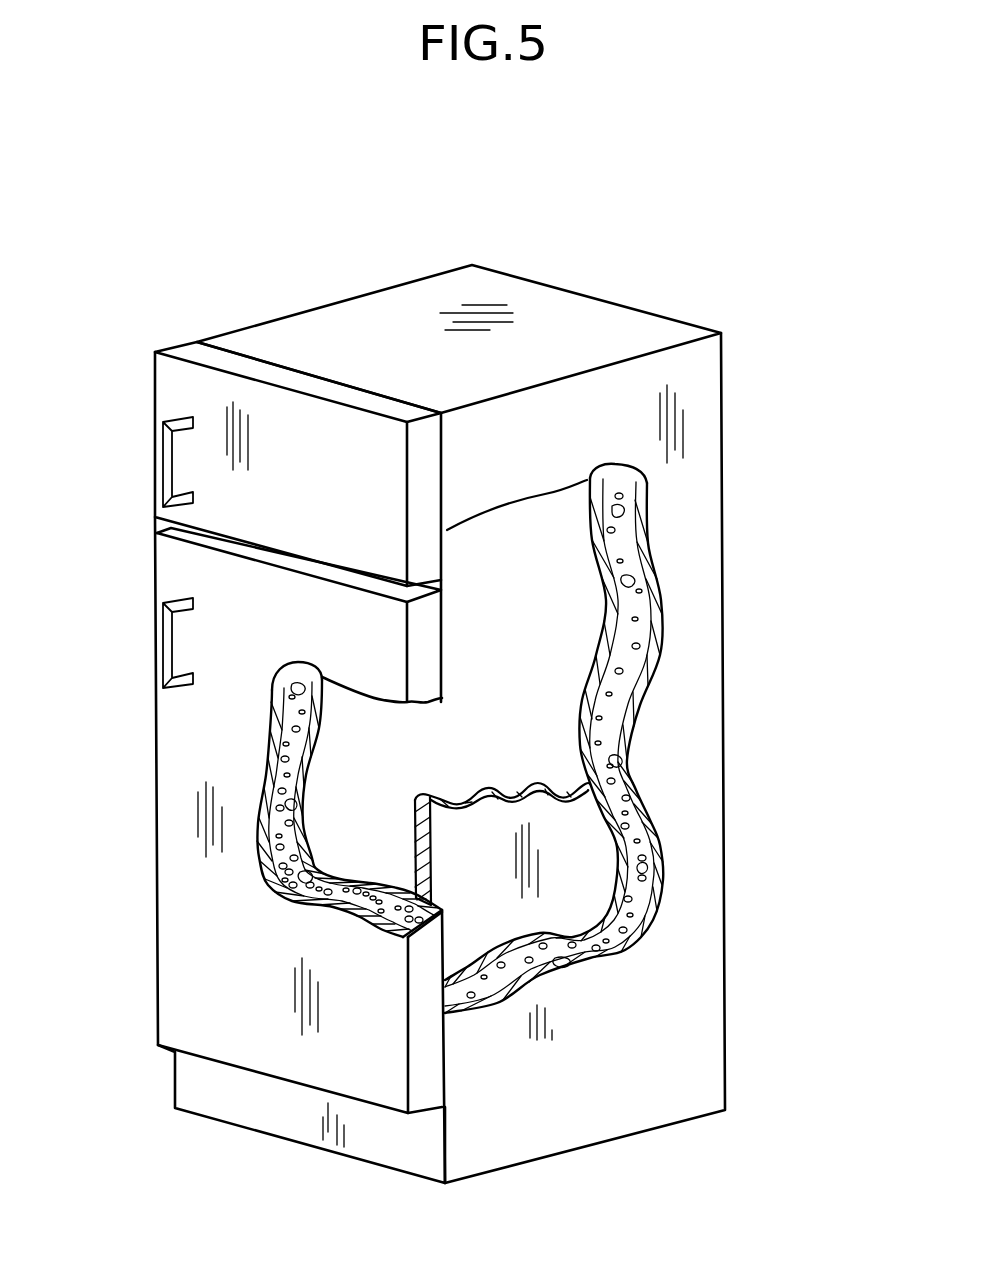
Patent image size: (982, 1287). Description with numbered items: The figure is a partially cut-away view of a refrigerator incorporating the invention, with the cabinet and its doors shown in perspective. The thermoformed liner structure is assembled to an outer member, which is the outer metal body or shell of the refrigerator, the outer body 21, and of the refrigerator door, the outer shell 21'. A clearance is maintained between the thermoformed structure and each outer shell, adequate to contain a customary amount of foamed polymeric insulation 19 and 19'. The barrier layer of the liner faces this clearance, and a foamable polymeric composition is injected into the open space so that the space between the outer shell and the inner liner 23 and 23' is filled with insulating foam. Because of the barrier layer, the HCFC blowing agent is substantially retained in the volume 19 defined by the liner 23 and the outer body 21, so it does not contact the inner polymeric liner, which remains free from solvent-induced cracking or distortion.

The foamed polymeric insulation 19 is at (636, 738).
The foamed polymeric insulation 19' is at (261, 799).
The outer body 21 is at (504, 724).
The outer shell of refrigerator door 21' is at (259, 815).
The inner liner 23 is at (631, 745).
The inner liner 23' is at (349, 803).